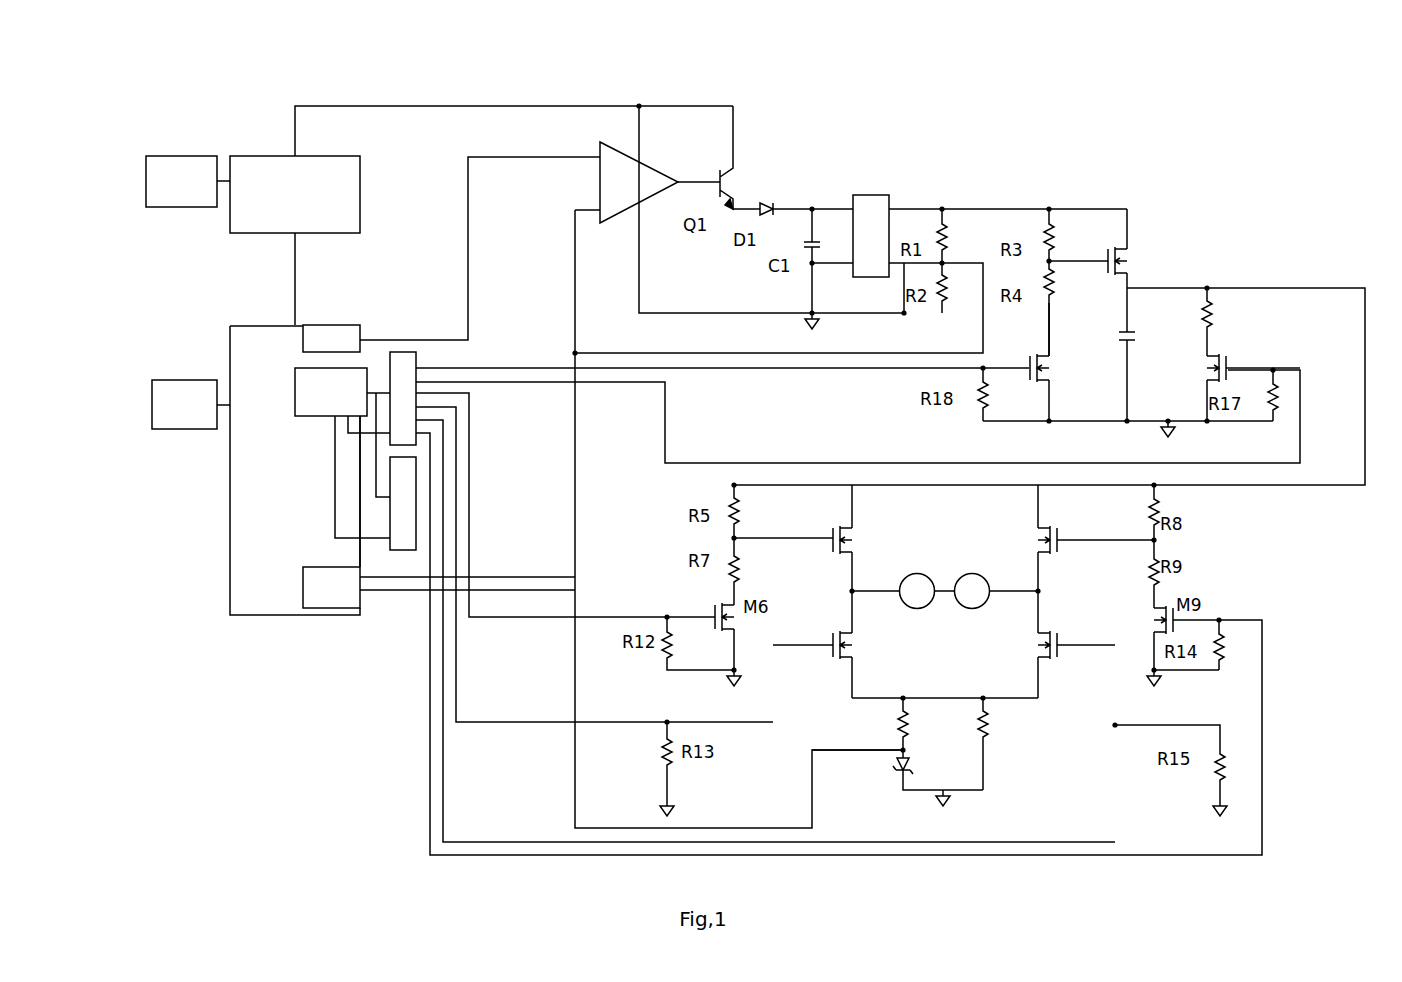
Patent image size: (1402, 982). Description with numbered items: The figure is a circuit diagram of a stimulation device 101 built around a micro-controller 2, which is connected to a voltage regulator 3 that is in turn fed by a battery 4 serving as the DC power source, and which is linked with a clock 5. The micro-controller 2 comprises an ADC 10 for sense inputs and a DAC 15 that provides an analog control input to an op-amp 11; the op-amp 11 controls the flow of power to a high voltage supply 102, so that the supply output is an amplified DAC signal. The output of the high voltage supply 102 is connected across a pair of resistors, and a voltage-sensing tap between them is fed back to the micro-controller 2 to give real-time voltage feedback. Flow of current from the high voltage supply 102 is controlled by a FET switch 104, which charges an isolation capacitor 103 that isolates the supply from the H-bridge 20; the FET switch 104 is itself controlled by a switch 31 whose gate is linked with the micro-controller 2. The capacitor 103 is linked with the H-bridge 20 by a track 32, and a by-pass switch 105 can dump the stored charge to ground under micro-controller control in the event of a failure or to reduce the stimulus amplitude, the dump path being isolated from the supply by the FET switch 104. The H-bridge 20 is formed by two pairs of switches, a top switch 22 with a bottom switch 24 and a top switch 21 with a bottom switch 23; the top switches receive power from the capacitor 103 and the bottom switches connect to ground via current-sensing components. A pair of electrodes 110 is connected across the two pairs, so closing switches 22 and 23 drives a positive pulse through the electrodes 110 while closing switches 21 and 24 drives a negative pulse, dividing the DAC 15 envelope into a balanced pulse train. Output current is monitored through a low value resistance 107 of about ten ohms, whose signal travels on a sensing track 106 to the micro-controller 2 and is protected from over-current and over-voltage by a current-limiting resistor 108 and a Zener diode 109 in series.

The stimulation device 101 is at (248, 113).
The micro-controller 2 is at (370, 406).
The voltage regulator 3 is at (322, 243).
The battery 4 is at (185, 210).
The clock 5 is at (203, 432).
The ADC 10 is at (340, 610).
The DAC 15 is at (348, 325).
The op-amp 11 is at (623, 157).
The high voltage supply 102 is at (861, 206).
The isolation capacitor 103 is at (1135, 338).
The FET switch 104 is at (1128, 262).
The by-pass switch 105 is at (1212, 356).
The switch 31 is at (1047, 364).
The track 32 is at (1298, 288).
The H-bridge 20 is at (1004, 591).
The top switch 21 is at (1042, 548).
The top switch 22 is at (847, 549).
The bottom switch 23 is at (1045, 649).
The bottom switch 24 is at (846, 634).
The electrodes 110 is at (910, 609).
The sensing track 106 is at (812, 796).
The low value resistance 107 is at (988, 726).
The current-limiting resistor 108 is at (898, 727).
The Zener diode 109 is at (900, 773).